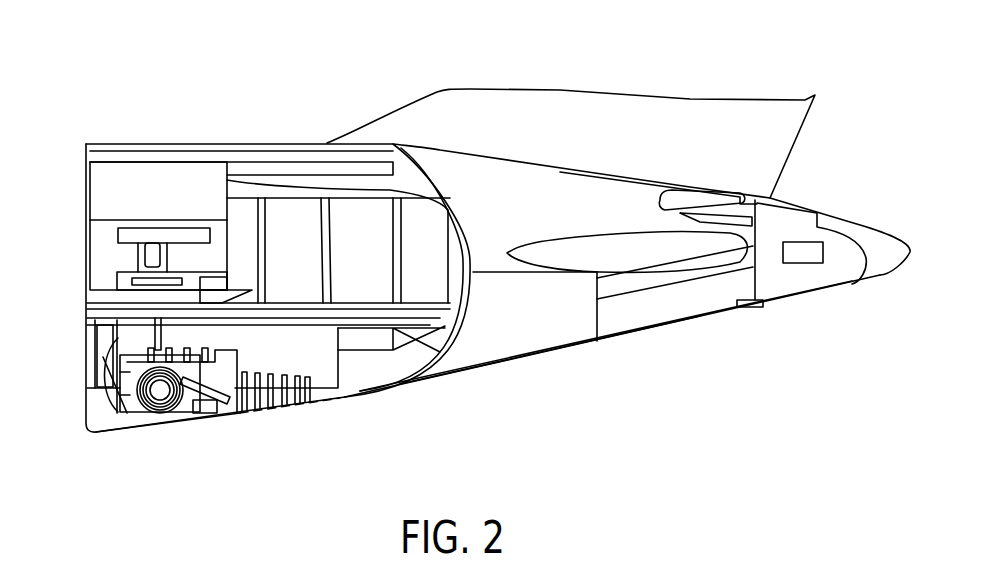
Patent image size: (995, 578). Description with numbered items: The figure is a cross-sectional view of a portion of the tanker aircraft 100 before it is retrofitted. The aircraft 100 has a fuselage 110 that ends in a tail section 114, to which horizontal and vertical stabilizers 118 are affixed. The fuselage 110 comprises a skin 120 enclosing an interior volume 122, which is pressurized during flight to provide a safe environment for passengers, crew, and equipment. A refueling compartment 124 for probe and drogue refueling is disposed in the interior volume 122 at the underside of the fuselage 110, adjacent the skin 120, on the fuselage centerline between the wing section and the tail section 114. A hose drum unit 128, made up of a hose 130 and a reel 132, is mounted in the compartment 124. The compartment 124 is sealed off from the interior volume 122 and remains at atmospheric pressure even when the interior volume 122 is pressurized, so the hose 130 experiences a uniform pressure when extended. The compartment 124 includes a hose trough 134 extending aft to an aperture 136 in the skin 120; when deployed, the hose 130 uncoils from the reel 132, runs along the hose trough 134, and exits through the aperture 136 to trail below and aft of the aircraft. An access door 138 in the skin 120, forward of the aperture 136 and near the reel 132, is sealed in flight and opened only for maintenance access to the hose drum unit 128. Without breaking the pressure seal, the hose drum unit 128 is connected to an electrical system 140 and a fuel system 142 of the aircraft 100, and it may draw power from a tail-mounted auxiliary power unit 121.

The aircraft 100 is at (316, 96).
The fuselage 110 is at (137, 155).
The tail section 114 is at (722, 352).
The stabilizers 118 is at (773, 148).
The skin 120 is at (465, 373).
The auxiliary power unit 121 is at (808, 264).
The interior volume 122 is at (103, 185).
The compartment 124 is at (227, 413).
The hose drum unit 128 is at (88, 437).
The hose 130 is at (197, 410).
The reel 132 is at (161, 395).
The hose trough 134 is at (277, 393).
The aperture 136 is at (330, 398).
The access door 138 is at (155, 430).
The electrical system 140 is at (93, 333).
The fuel system 142 is at (377, 313).